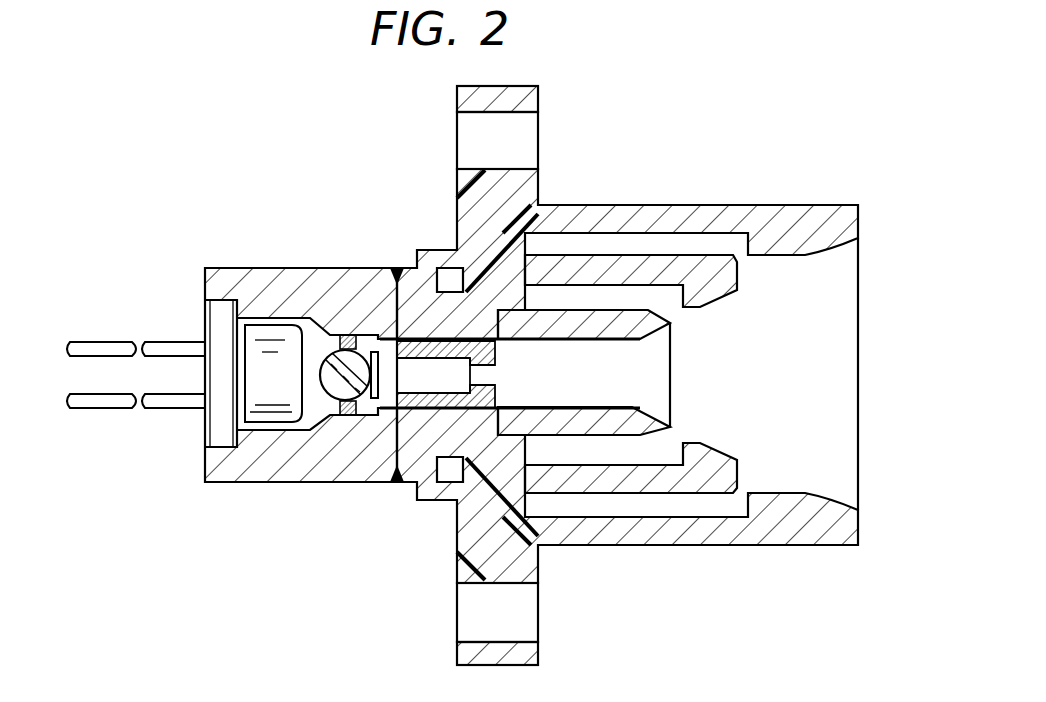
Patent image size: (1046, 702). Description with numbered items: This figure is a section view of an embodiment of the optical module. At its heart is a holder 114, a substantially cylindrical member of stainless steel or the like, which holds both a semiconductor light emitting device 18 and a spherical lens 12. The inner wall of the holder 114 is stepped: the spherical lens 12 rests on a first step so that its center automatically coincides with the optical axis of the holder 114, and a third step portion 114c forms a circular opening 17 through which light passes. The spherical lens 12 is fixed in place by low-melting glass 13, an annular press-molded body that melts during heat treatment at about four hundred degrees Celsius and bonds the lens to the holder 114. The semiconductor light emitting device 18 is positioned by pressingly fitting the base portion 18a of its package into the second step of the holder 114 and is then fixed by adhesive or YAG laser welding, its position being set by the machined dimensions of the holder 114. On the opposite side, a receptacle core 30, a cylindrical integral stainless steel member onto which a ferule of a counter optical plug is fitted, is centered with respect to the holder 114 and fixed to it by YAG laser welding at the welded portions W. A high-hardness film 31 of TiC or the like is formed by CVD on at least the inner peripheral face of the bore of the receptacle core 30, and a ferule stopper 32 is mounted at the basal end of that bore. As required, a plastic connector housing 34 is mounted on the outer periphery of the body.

The holder 114 is at (266, 282).
The third step portion 114c is at (376, 352).
The spherical lens 12 is at (325, 420).
The low-melting glass 13 is at (352, 415).
The circular opening 17 is at (382, 396).
The semiconductor light emitting device 18 is at (258, 391).
The base portion 18a is at (217, 335).
The receptacle core 30 is at (427, 292).
The high-hardness film 31 is at (607, 408).
The ferule stopper 32 is at (478, 394).
The connector housing 34 is at (508, 557).
The welded portions W is at (393, 268).